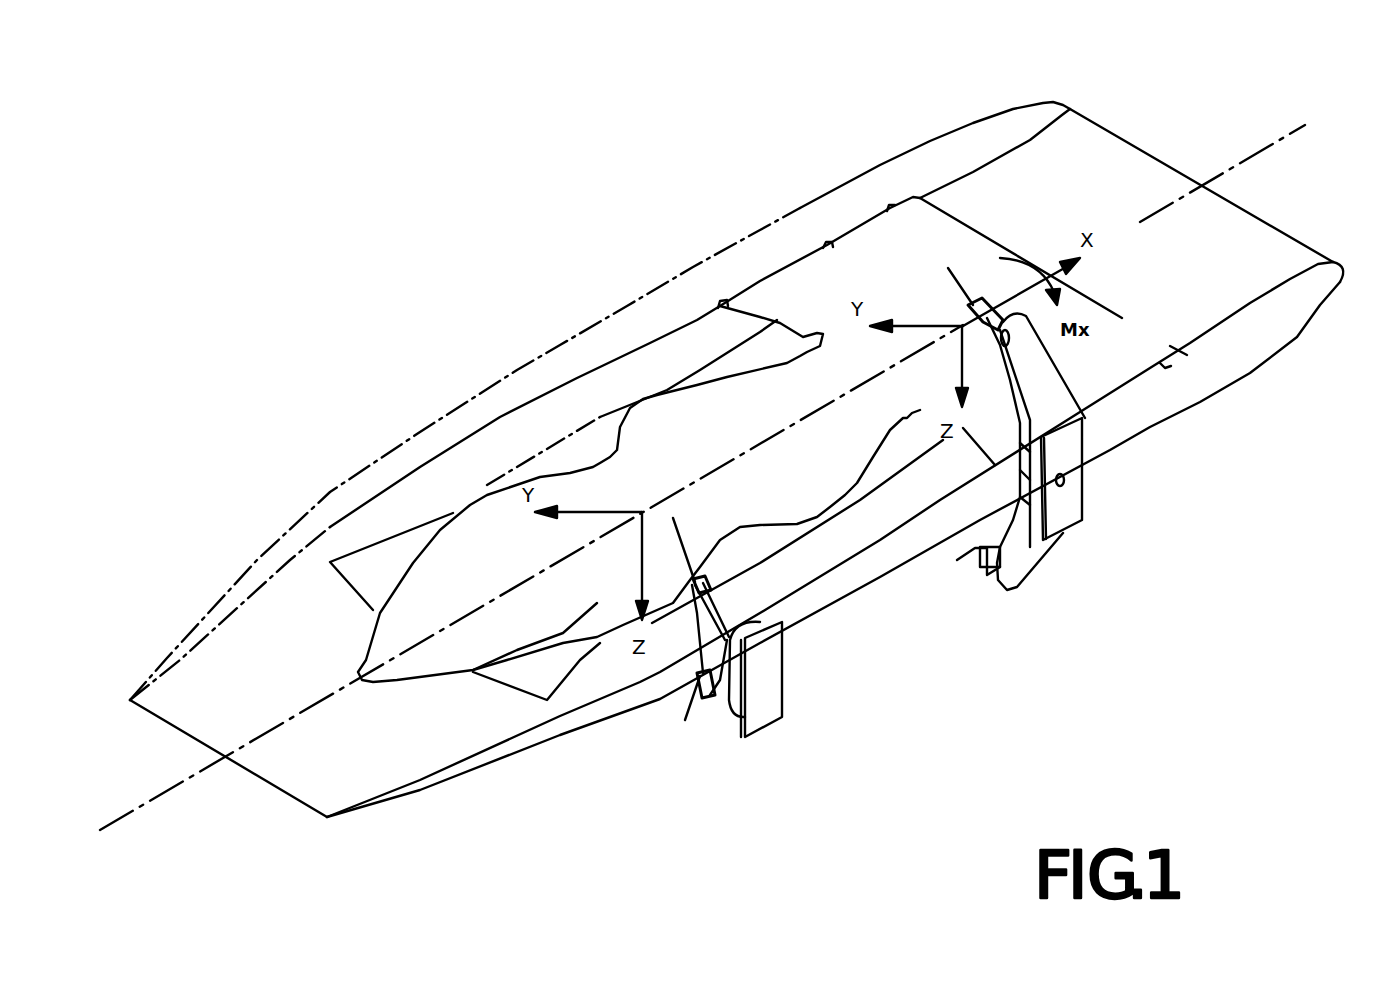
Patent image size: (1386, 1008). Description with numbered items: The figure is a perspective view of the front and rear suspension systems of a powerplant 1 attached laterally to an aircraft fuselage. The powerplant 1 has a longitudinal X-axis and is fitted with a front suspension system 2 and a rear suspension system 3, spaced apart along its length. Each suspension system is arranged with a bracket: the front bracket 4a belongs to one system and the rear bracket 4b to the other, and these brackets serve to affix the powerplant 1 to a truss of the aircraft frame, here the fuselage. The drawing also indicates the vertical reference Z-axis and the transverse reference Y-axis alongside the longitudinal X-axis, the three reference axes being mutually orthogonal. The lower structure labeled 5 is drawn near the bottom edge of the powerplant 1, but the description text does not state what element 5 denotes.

The powerplant 1 is at (453, 557).
The front suspension system 2 is at (1040, 580).
The rear suspension system 3 is at (735, 733).
The front bracket 4a is at (1070, 507).
The rear bracket 4b is at (770, 690).
The nacelle lower fairing 5 is at (557, 735).